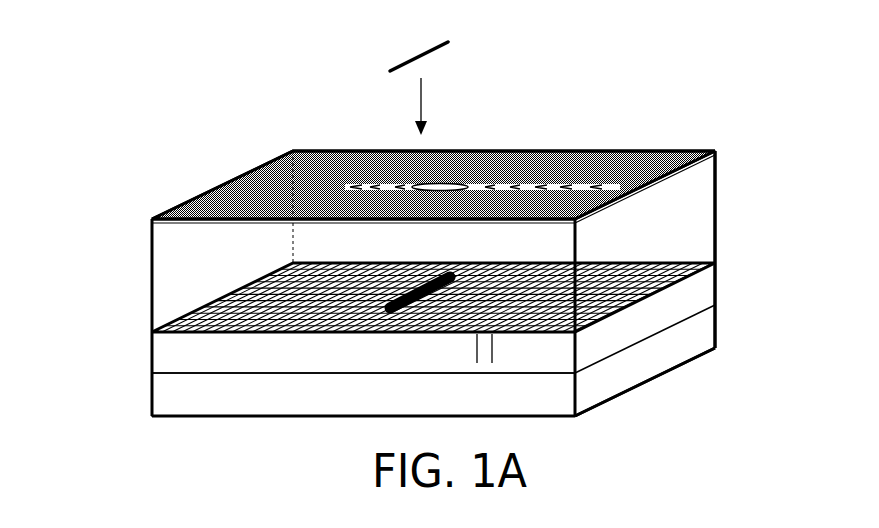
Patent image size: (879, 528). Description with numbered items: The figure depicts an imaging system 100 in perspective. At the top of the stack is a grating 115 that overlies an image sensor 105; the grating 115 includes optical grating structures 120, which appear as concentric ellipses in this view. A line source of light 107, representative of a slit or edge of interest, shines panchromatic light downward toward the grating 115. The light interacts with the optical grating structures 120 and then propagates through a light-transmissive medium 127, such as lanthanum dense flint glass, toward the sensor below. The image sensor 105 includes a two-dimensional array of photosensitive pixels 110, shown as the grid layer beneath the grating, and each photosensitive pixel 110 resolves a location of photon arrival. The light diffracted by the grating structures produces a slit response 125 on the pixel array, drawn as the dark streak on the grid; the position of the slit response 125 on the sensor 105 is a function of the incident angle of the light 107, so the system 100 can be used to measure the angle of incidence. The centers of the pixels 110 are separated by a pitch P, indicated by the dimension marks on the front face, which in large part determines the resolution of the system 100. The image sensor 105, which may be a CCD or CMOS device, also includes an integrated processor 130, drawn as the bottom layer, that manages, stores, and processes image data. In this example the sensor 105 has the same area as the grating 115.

The imaging system 100 is at (124, 117).
The image sensor 105 is at (371, 366).
The line source of light 107 is at (430, 50).
The photosensitive pixels 110 is at (318, 262).
The grating 115 is at (184, 202).
The optical grating structures 120 is at (440, 187).
The slit response 125 is at (425, 270).
The light-transmissive medium 127 is at (714, 227).
The integrated processor 130 is at (371, 406).
The pitch P is at (520, 354).